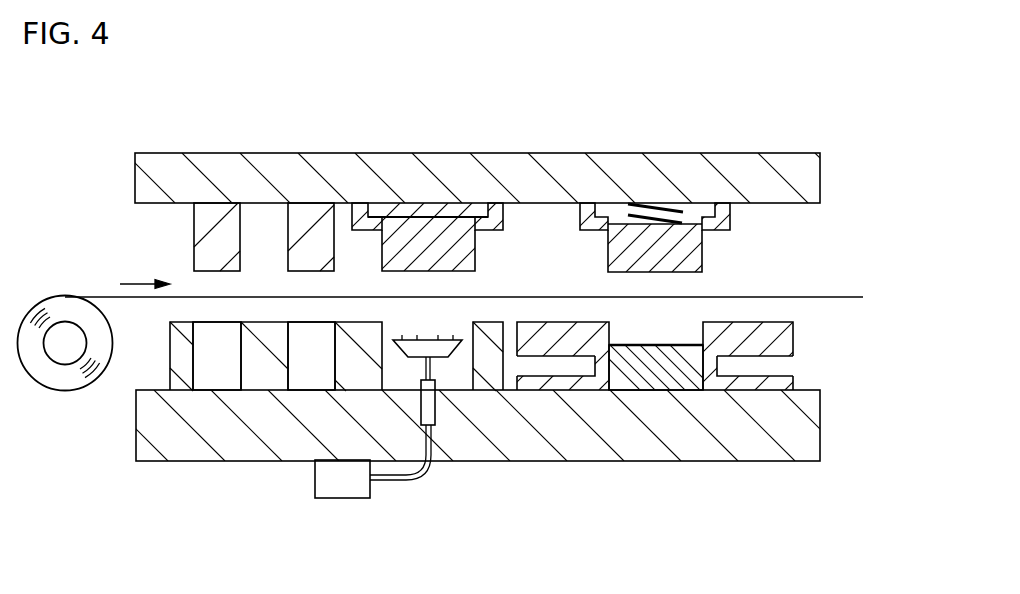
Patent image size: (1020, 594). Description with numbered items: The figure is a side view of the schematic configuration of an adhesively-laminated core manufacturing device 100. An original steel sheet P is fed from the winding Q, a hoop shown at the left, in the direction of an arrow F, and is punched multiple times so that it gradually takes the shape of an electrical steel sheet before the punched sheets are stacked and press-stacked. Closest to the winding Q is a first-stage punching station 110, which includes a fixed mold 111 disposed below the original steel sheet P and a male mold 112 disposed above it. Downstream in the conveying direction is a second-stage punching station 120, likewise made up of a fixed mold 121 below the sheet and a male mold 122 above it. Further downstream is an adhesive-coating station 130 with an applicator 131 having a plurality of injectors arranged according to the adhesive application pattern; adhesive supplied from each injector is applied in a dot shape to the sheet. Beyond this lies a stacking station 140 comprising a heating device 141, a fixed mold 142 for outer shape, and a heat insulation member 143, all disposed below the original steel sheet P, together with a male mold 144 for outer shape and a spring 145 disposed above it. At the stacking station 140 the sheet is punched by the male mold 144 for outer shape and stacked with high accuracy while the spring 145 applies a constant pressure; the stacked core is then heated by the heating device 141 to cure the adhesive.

The manufacturing device 100 is at (876, 195).
The first-stage punching station 110 is at (228, 305).
The fixed mold 111 is at (195, 362).
The male mold 112 is at (233, 230).
The second-stage punching station 120 is at (322, 305).
The fixed mold 121 is at (288, 362).
The male mold 122 is at (330, 230).
The adhesive-coating station 130 is at (399, 459).
The applicator 131 is at (455, 350).
The stacking station 140 is at (660, 304).
The heating device 141 is at (717, 368).
The fixed mold for outer shape 142 is at (793, 338).
The heat insulation member 143 is at (552, 387).
The male mold for outer shape 144 is at (702, 245).
The spring 145 is at (672, 207).
The original steel sheet P is at (102, 297).
The winding Q is at (38, 383).
The arrow F is at (138, 284).